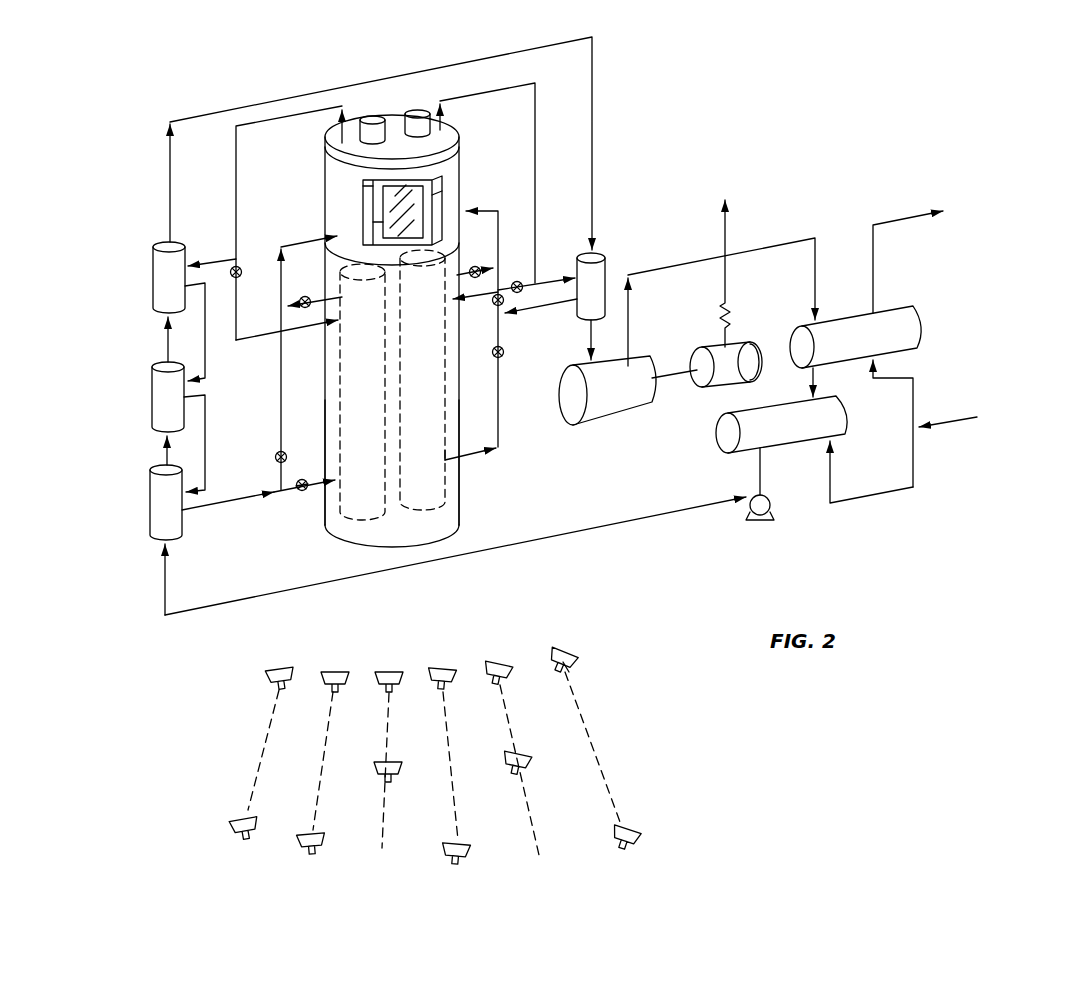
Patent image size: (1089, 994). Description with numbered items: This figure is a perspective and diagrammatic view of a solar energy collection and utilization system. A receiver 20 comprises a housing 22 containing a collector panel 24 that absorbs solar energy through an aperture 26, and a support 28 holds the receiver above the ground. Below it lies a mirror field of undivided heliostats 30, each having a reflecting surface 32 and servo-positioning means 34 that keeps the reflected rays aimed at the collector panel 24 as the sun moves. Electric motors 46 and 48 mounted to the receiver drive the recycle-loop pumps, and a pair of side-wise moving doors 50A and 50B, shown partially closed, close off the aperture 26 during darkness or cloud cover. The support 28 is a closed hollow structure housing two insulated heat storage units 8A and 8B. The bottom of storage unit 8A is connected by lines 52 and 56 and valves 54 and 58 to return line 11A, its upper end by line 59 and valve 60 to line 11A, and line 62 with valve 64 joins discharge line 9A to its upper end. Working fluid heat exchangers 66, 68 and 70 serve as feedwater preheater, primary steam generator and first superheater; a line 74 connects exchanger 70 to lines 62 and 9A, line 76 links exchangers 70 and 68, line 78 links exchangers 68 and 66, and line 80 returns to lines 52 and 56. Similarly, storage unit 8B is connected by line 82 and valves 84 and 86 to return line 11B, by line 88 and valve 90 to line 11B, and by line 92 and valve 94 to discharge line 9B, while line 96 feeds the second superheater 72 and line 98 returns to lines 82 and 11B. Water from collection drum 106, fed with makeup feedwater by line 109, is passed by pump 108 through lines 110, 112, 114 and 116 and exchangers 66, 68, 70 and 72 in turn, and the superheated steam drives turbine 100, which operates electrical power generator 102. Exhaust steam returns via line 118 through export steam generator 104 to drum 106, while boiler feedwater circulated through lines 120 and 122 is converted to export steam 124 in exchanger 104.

The receiver 20 is at (367, 112).
The housing 22 is at (322, 168).
The collector panel 24 is at (406, 195).
The aperture 26 is at (372, 192).
The support 28 is at (460, 508).
The heliostats 30 is at (266, 676).
The reflecting surface 32 is at (575, 650).
The servo-positioning means 34 is at (572, 665).
The electric motor 46 is at (376, 128).
The electric motor 48 is at (420, 122).
The side-wise moving door 50A is at (375, 222).
The side-wise moving door 50B is at (444, 193).
The heat storage unit 8A is at (338, 518).
The heat storage unit 8B is at (449, 470).
The discharge line 9A is at (270, 100).
The discharge line 9B is at (498, 86).
The return line 11A is at (300, 242).
The return line 11B is at (481, 208).
The line 52 is at (298, 480).
The valve 54 is at (300, 490).
The line 56 is at (281, 400).
The valve 58 is at (275, 458).
The line 59 is at (304, 297).
The valve 60 is at (296, 303).
The line 62 is at (264, 334).
The valve 64 is at (241, 270).
The working fluid heat exchanger 66 is at (157, 505).
The working fluid heat exchanger 68 is at (160, 393).
The working fluid heat exchanger 70 is at (164, 273).
The working fluid heat exchanger 72 is at (603, 285).
The line 74 is at (206, 260).
The line 76 is at (205, 350).
The line 78 is at (203, 432).
The line 80 is at (222, 503).
The line 82 is at (498, 432).
The valve 84 is at (505, 353).
The valve 86 is at (508, 304).
The line 88 is at (468, 270).
The valve 90 is at (480, 268).
The line 92 is at (477, 297).
The valve 94 is at (517, 282).
The line 96 is at (548, 283).
The line 98 is at (563, 302).
The turbine 100 is at (612, 402).
The electrical power generator 102 is at (722, 386).
The heat exchanger 104 is at (893, 313).
The collection drum 106 is at (846, 412).
The pump 108 is at (749, 506).
The line 109 is at (875, 496).
The line 110 is at (395, 572).
The line 112 is at (167, 448).
The line 114 is at (167, 325).
The line 116 is at (170, 176).
The line 118 is at (783, 240).
The line 120 is at (960, 421).
The line 122 is at (914, 380).
The steam outlet 124 is at (893, 218).